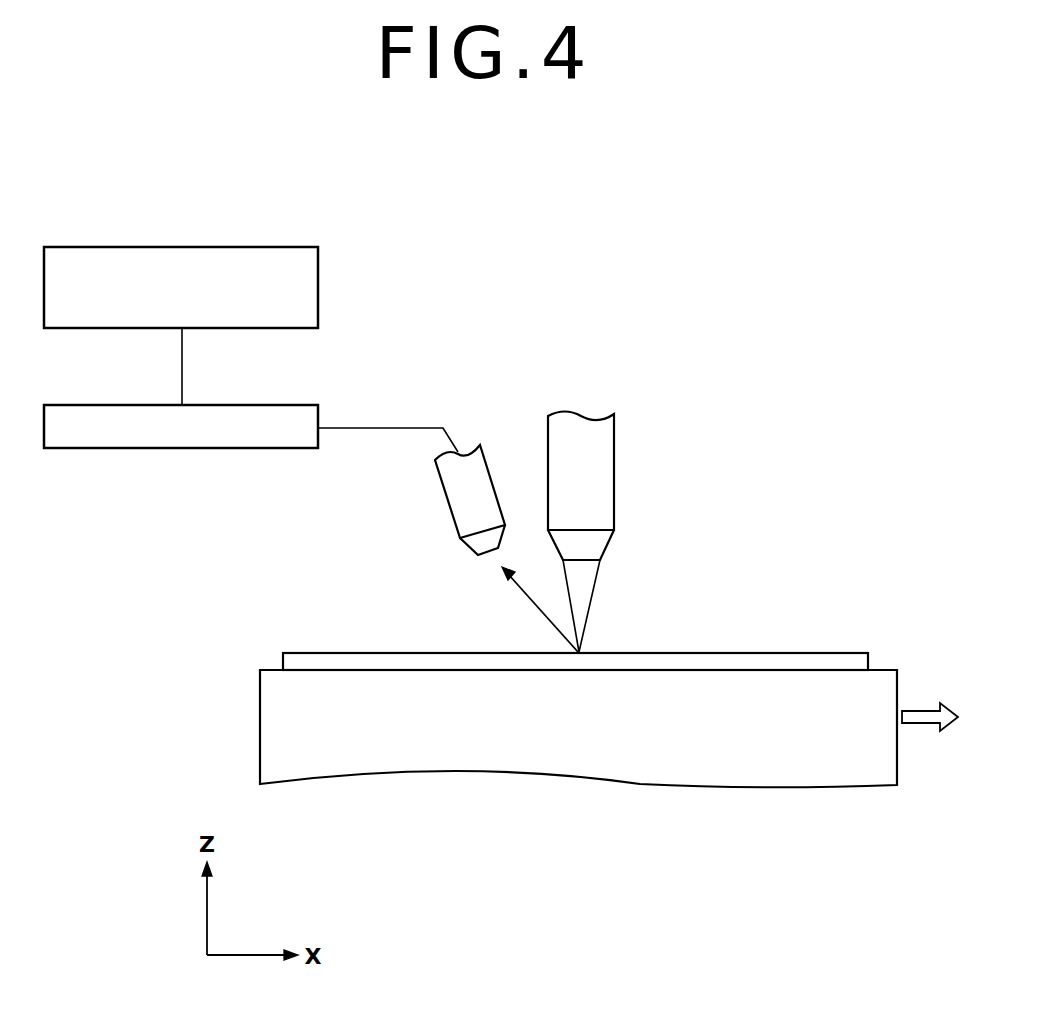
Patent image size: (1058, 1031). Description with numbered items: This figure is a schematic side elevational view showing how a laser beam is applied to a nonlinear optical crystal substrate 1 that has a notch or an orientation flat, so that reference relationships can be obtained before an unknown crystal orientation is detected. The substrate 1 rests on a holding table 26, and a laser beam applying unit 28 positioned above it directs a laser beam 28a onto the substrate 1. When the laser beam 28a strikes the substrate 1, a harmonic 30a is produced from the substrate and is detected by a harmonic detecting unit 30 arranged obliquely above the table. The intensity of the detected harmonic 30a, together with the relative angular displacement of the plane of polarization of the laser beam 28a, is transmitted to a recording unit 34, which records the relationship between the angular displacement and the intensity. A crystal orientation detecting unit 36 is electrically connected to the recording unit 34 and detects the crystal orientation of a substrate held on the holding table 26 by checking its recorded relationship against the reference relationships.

The nonlinear optical crystal substrate 1 is at (790, 662).
The holding table 26 is at (752, 775).
The laser beam applying unit 28 is at (603, 443).
The laser beam 28a is at (593, 598).
The harmonic detecting unit 30 is at (452, 490).
The harmonic 30a is at (522, 597).
The recording unit 34 is at (215, 405).
The crystal orientation detecting unit 36 is at (215, 246).